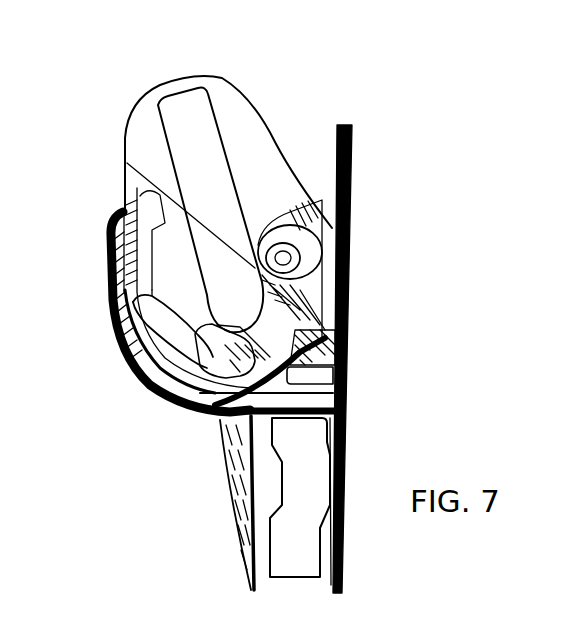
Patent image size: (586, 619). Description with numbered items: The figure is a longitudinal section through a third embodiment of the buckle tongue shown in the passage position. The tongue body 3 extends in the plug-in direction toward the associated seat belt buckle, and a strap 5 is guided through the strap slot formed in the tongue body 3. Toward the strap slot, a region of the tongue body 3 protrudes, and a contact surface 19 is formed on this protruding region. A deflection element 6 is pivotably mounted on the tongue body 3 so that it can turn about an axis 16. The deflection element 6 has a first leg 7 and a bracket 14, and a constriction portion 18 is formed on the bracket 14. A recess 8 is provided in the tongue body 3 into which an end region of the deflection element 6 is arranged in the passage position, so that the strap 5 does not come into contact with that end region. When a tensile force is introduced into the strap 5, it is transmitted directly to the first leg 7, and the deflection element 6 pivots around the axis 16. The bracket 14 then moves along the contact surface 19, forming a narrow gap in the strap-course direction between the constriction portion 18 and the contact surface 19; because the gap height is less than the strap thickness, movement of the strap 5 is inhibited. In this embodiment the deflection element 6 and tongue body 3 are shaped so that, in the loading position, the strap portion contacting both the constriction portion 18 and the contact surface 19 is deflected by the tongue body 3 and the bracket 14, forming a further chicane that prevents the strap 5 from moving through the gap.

The tongue body 3 is at (178, 106).
The strap 5 is at (351, 148).
The deflection element 6 is at (310, 272).
The first leg 7 is at (157, 338).
The recess 8 is at (140, 224).
The bracket 14 is at (330, 377).
The axis 16 is at (313, 243).
The constriction portion 18 is at (317, 358).
The contact surface 19 is at (203, 346).